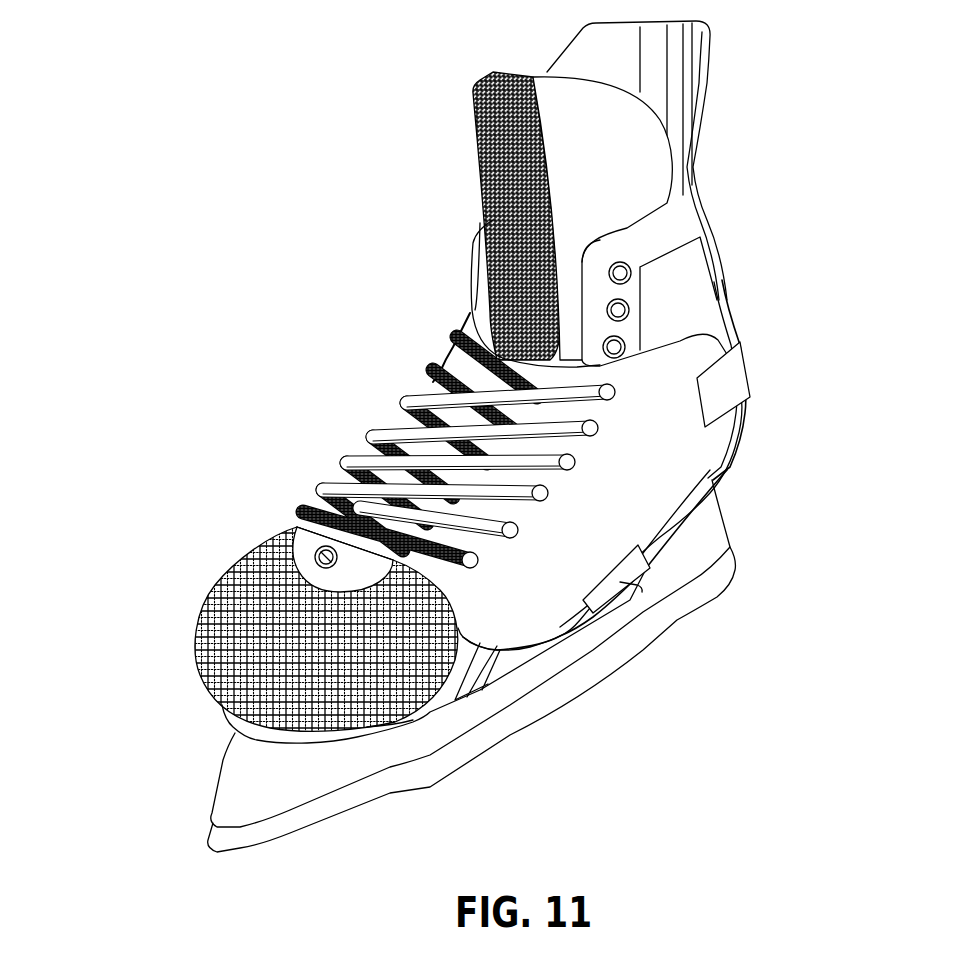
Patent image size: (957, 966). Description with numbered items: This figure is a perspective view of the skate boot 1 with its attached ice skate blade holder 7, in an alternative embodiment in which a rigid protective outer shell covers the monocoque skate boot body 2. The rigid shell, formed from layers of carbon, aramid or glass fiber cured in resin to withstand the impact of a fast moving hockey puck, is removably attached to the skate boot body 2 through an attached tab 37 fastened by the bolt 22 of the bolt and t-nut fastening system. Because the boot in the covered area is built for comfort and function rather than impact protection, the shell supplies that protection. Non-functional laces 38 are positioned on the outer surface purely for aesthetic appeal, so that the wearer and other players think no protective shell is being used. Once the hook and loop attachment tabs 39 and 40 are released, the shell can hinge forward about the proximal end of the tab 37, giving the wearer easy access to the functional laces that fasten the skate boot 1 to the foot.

The skate boot 1 is at (458, 436).
The monocoque skate boot body 2 is at (482, 382).
The ice skate blade holder 7 is at (222, 778).
The bolt 22 is at (326, 556).
The tab 37 is at (343, 543).
The non-functional laces 38 is at (432, 455).
The hook and loop attachment tab 39 is at (623, 583).
The hook and loop attachment tab 40 is at (735, 377).